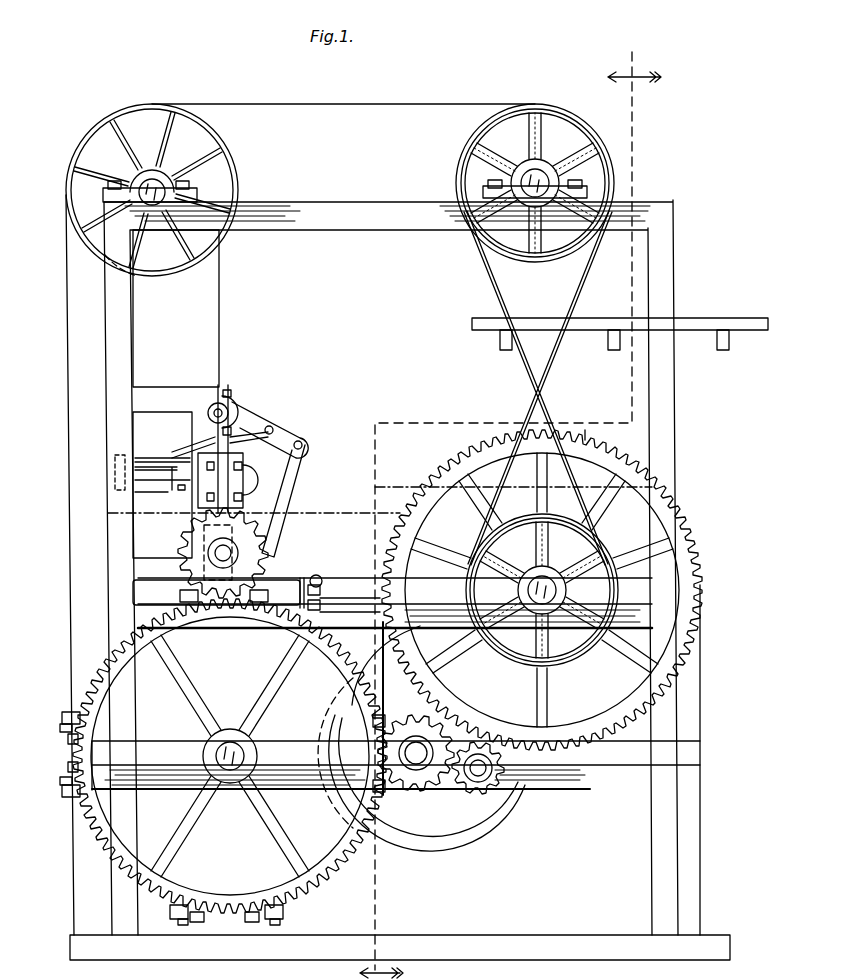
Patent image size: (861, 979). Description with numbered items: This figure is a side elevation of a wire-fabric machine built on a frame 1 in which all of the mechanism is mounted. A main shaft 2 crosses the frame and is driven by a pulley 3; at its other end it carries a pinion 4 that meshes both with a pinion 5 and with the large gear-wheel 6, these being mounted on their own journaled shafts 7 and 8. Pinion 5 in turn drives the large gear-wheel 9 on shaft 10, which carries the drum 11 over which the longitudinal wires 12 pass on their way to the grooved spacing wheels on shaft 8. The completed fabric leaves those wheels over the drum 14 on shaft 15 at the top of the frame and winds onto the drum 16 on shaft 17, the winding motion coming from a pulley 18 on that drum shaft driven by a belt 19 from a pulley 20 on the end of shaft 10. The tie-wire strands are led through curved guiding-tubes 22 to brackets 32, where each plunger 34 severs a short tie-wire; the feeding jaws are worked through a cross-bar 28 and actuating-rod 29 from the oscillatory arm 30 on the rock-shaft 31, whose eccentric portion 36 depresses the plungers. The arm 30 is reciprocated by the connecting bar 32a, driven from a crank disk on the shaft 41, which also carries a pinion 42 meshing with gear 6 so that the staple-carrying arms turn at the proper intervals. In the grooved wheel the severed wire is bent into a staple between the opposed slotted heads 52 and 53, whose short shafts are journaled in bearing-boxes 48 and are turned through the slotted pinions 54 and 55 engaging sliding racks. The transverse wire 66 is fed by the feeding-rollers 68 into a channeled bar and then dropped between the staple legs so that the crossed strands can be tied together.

The frame 1 is at (122, 346).
The main shaft 2 is at (413, 798).
The pulley 3 is at (490, 826).
The pinion 4 is at (428, 775).
The pinion 5 is at (515, 776).
The large gear-wheel 6 is at (345, 812).
The shaft 7 is at (480, 780).
The shaft 8 is at (230, 745).
The large gear-wheel 9 is at (636, 706).
The shaft 10 is at (546, 592).
The drum 11 is at (584, 432).
The longitudinal wires 12 is at (703, 784).
The drum 14 is at (215, 162).
The shaft 15 is at (158, 183).
The drum 16 is at (475, 132).
The shaft 17 is at (540, 175).
The pulley 18 is at (608, 180).
The belt 19 is at (575, 266).
The pulley 20 is at (560, 662).
The curved guiding-tubes 22 is at (259, 476).
The cross-bar 28 is at (150, 462).
The actuating-rod 29 is at (193, 443).
The oscillatory arm 30 is at (268, 426).
The rock-shaft 31 is at (210, 408).
The brackets 32 is at (207, 484).
The connecting bar 32a is at (292, 480).
The plunger 34 is at (232, 445).
The eccentric portion 36 is at (234, 402).
The shaft 41 is at (232, 553).
The pinion 42 is at (262, 582).
The bearing-boxes 48 is at (164, 830).
The slotted head 52 is at (68, 738).
The slotted head 53 is at (68, 768).
The slotted pinion 54 is at (180, 595).
The slotted pinion 55 is at (262, 598).
The transverse wire 66 is at (328, 602).
The feeding-rollers 68 is at (322, 582).